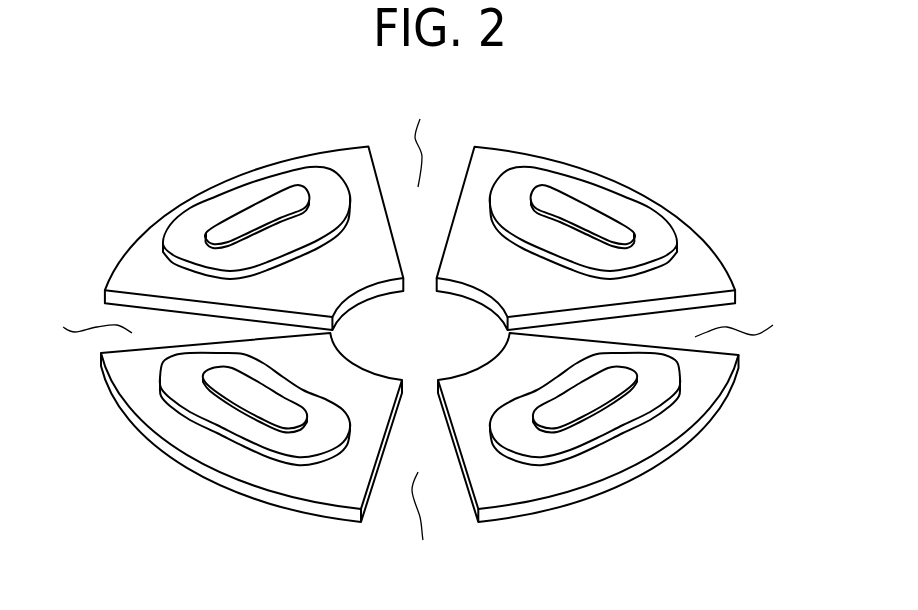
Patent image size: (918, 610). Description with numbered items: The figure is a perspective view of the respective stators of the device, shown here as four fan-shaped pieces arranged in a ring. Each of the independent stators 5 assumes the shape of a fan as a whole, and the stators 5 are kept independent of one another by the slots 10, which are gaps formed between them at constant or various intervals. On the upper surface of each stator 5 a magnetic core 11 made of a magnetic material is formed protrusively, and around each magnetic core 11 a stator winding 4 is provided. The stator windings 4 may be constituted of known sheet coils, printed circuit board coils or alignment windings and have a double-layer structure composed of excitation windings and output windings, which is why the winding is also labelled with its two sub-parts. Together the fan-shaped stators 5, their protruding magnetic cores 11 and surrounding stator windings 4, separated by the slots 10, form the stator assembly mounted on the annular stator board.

The stator winding 4 is at (300, 178).
The stator 5 is at (145, 252).
The slot 10 is at (418, 334).
The magnetic core 11 is at (257, 213).